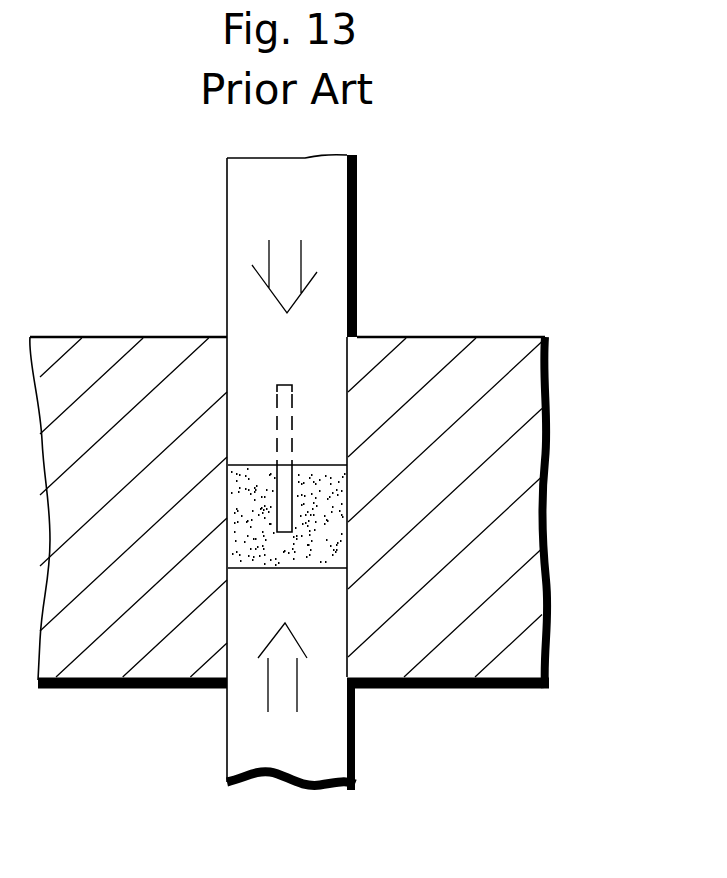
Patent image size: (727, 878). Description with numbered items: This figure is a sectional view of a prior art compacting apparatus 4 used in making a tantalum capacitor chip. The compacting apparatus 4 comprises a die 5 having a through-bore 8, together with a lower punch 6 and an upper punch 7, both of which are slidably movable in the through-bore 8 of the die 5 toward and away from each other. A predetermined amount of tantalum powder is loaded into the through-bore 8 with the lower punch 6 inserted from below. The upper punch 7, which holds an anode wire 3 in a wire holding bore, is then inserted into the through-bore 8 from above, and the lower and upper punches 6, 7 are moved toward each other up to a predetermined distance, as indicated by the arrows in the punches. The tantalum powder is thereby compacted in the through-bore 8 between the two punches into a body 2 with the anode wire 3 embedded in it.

The compacted tantalum powder body 2 is at (322, 508).
The anode wire 3 is at (282, 517).
The compacting apparatus 4 is at (168, 298).
The die 5 is at (440, 337).
The lower punch 6 is at (333, 738).
The upper punch 7 is at (436, 200).
The through-bore 8 is at (347, 370).